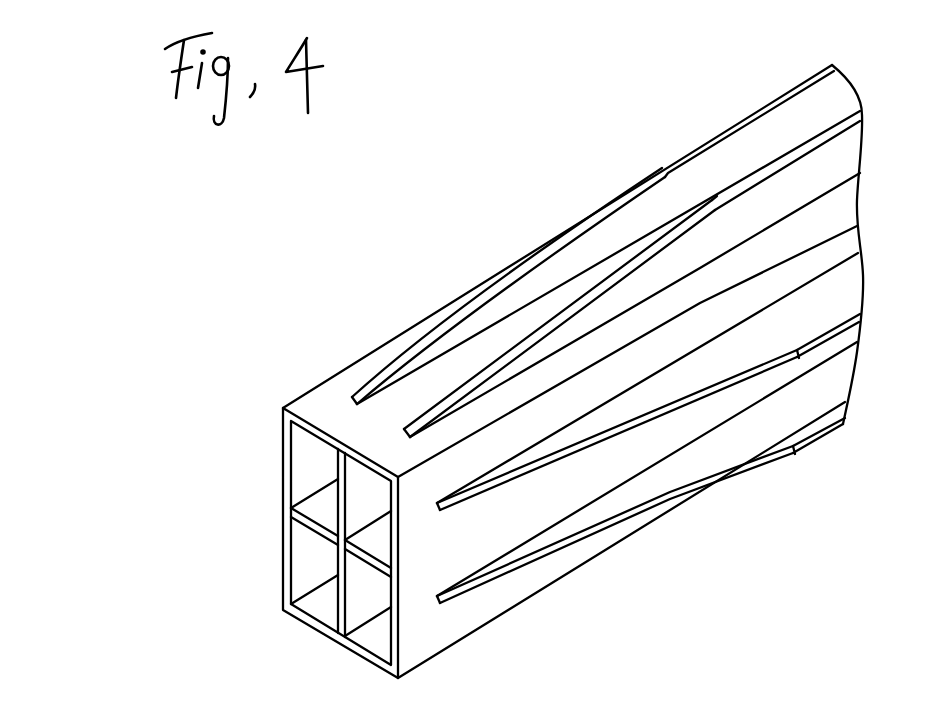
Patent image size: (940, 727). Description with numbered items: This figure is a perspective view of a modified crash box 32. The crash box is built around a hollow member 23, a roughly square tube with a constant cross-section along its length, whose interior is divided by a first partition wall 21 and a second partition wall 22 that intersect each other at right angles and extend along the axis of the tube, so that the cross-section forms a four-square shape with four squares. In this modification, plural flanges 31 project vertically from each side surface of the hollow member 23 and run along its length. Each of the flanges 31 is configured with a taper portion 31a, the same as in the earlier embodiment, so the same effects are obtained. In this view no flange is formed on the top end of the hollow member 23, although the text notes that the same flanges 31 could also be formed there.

The first partition wall 21 is at (343, 476).
The second partition wall 22 is at (377, 567).
The hollow member 23 is at (323, 392).
The flanges 31 is at (809, 170).
The taper portions 31a is at (604, 288).
The crash box 32 is at (718, 61).